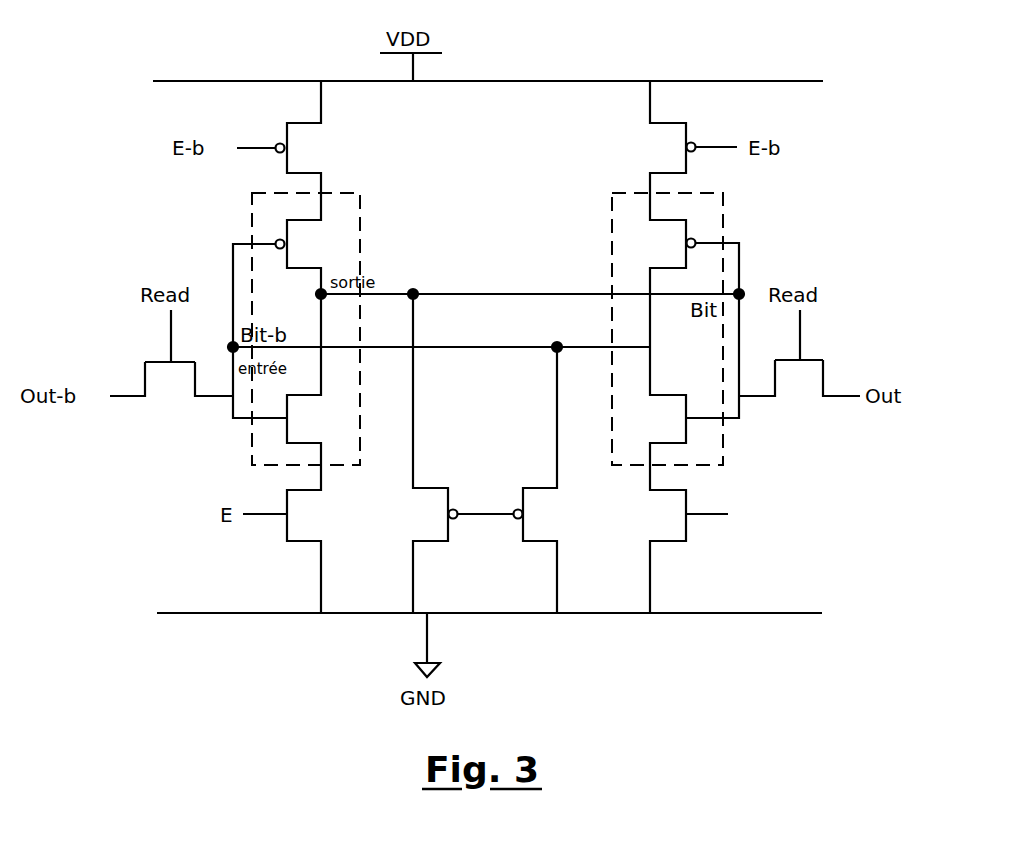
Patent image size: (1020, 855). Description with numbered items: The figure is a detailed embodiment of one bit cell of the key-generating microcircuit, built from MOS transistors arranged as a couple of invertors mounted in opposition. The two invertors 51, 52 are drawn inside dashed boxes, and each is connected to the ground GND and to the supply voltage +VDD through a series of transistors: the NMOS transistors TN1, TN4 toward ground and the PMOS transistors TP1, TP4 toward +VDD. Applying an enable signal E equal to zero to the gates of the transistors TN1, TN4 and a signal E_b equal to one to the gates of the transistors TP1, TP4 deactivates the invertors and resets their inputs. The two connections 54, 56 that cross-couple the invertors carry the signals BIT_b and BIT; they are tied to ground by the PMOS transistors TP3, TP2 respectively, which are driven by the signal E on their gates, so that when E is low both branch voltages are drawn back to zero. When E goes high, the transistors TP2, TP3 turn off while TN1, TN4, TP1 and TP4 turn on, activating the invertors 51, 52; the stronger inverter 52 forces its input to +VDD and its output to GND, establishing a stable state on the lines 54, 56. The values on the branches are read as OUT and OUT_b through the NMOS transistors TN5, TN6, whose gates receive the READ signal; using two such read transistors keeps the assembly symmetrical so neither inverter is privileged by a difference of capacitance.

The invertor 51 is at (612, 208).
The invertor 52 is at (360, 213).
The branch 54 is at (498, 348).
The branch 56 is at (523, 293).
The PMOS transistor TP1 is at (324, 147).
The PMOS transistor TP2 is at (430, 558).
The PMOS transistor TP3 is at (542, 558).
The PMOS transistor TP4 is at (702, 115).
The NMOS transistor TN1 is at (262, 540).
The NMOS transistor TN4 is at (716, 545).
The NMOS transistor TN5 is at (800, 400).
The NMOS transistor TN6 is at (164, 410).